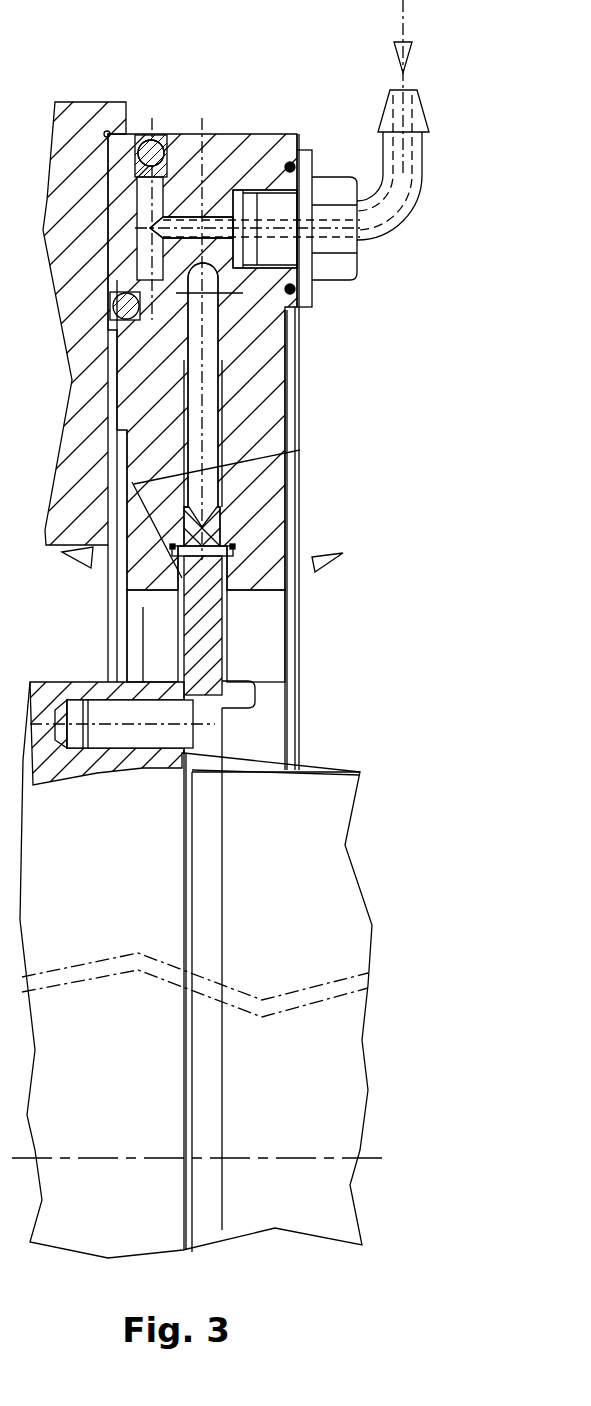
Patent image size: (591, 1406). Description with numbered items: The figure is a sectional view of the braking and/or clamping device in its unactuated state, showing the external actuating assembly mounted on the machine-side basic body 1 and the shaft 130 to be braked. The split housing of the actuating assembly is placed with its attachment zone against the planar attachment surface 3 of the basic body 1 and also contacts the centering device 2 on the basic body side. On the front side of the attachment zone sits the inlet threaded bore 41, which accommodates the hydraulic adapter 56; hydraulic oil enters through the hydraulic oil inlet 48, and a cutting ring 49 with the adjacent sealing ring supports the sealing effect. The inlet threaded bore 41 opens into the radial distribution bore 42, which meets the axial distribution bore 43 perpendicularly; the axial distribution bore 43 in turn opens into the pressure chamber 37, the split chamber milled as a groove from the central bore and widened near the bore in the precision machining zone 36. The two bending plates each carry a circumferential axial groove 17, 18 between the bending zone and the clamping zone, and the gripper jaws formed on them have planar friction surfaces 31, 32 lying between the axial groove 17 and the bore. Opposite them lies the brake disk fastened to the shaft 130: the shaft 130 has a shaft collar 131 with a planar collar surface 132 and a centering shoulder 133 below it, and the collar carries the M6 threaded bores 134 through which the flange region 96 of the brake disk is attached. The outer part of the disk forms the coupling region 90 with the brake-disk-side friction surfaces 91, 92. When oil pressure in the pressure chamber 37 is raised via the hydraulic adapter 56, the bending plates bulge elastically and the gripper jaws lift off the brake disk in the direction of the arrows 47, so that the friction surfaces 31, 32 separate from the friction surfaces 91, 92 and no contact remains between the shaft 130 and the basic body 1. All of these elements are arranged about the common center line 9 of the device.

The basic body 1 is at (86, 123).
The centering device 2 is at (118, 134).
The attachment surface 3 is at (108, 233).
The radial distribution bore 42 is at (158, 212).
The inlet threaded bore 41 is at (257, 187).
The hydraulic adapter 56 is at (388, 121).
The hydraulic oil inlet 48 is at (403, 55).
The cutting ring 49 is at (290, 297).
The axial distribution bore 43 is at (176, 312).
The pressure chamber 37 is at (210, 432).
The friction surface 31 is at (132, 480).
The axial groove in inner bending plate 18 is at (134, 484).
The precision machining zone 36 is at (223, 497).
The axial groove in outer bending plate 17 is at (220, 568).
The friction surface 91 is at (182, 578).
The arrows, direction of movement 47 is at (343, 553).
The friction surface 32 is at (222, 583).
The coupling region 90 is at (232, 600).
The flange region 96 is at (232, 693).
The M6 threaded bores 134 is at (77, 749).
The friction surface 92 is at (143, 682).
The collar surface 132 is at (184, 753).
The centering shoulder 133 is at (202, 771).
The shaft collar 131 is at (184, 850).
The shaft 130 is at (307, 937).
The center line 9 is at (300, 1158).